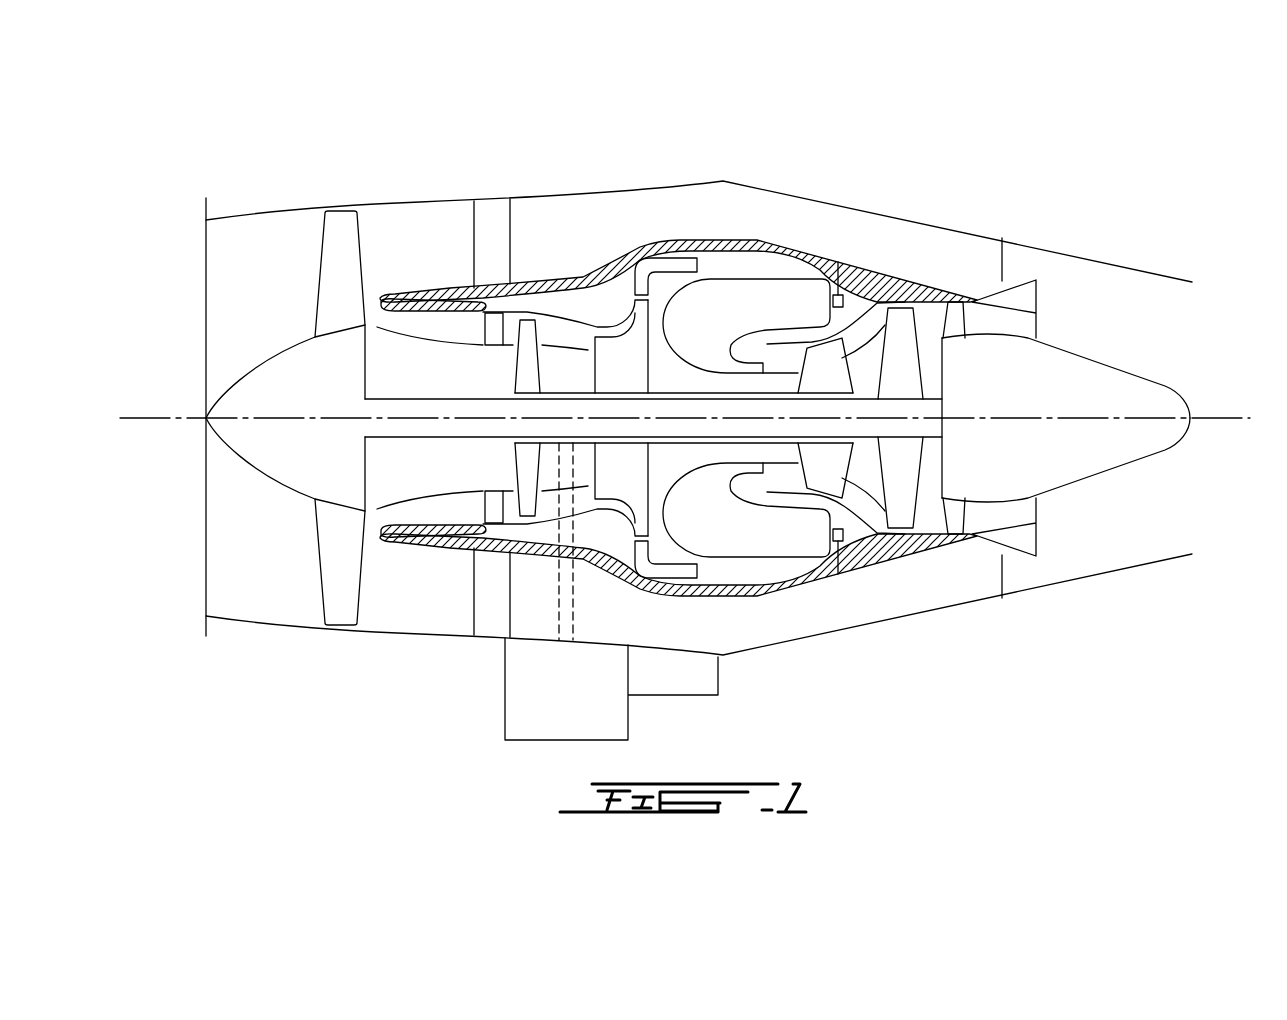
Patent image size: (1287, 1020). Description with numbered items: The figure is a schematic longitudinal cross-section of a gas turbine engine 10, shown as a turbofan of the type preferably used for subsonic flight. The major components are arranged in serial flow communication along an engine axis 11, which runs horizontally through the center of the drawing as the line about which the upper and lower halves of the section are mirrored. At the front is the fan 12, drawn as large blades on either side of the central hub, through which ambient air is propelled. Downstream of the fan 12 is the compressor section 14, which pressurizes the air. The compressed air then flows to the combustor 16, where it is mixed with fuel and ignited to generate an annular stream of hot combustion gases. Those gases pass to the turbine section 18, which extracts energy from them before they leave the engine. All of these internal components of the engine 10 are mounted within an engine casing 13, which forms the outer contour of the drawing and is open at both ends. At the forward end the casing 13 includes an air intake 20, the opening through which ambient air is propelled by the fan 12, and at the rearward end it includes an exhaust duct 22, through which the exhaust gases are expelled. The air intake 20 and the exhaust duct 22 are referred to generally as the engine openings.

The gas turbine engine 10 is at (886, 122).
The engine axis 11 is at (1223, 418).
The fan 12 is at (337, 552).
The engine casing 13 is at (440, 200).
The compressor section 14 is at (557, 330).
The combustor 16 is at (748, 295).
The turbine section 18 is at (865, 477).
The air intake 20 is at (206, 265).
The exhaust duct 22 is at (1140, 537).